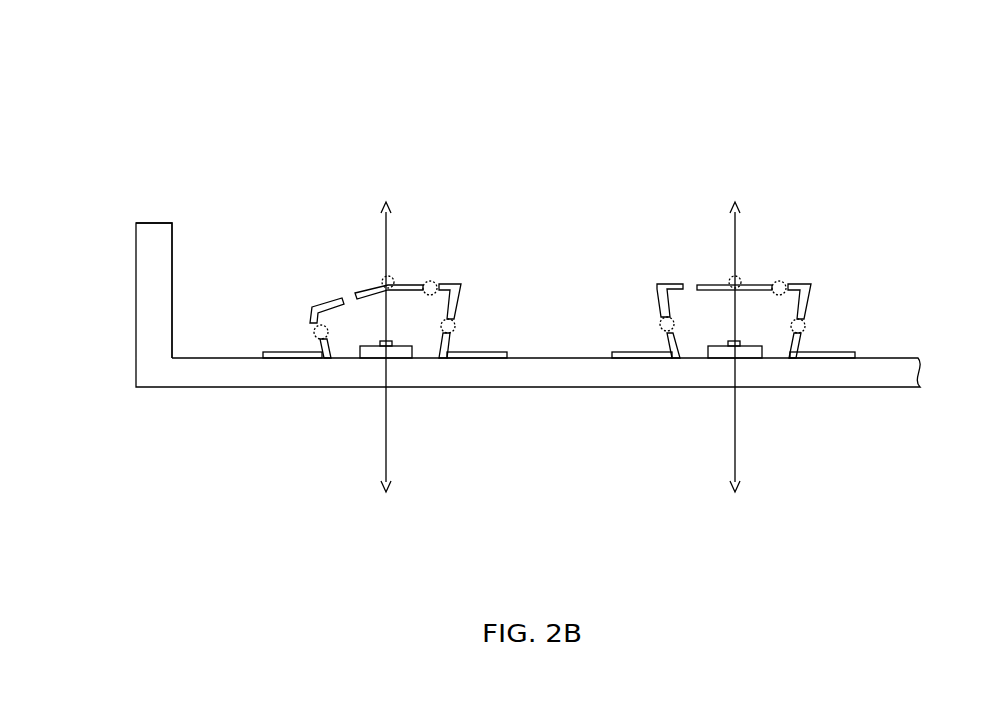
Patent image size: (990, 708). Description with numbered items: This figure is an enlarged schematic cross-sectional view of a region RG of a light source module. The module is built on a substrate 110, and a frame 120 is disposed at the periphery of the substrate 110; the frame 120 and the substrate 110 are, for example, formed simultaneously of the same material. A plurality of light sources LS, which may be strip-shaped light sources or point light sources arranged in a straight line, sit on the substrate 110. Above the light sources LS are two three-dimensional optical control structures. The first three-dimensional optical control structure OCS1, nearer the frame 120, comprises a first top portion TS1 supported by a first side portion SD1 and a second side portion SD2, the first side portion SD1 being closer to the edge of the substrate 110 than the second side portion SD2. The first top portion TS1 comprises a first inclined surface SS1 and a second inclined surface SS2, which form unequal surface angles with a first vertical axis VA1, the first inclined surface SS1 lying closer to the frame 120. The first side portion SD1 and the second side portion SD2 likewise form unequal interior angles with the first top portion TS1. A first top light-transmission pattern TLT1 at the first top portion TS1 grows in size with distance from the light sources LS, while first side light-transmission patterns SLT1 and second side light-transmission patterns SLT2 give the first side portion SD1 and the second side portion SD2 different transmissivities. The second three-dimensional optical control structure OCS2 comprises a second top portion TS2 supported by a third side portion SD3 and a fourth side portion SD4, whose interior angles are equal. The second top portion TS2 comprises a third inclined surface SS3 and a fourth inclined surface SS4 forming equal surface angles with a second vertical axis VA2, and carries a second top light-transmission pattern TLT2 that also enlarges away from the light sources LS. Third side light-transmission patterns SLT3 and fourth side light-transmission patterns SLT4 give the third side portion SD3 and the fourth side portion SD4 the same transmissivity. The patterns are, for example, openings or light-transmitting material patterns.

The substrate 110 is at (908, 375).
The frame 120 is at (157, 243).
The light sources LS is at (752, 358).
The first vertical axis VA1 is at (382, 329).
The second vertical axis VA2 is at (731, 329).
The first side light-transmission patterns SLT1 is at (313, 333).
The second side light-transmission patterns SLT2 is at (440, 335).
The third side light-transmission patterns SLT3 is at (660, 328).
The fourth side light-transmission patterns SLT4 is at (806, 331).
The first side portion SD1 is at (305, 310).
The second side portion SD2 is at (465, 313).
The third side portion SD3 is at (649, 294).
The fourth side portion SD4 is at (822, 298).
The first inclined surface SS1 is at (330, 287).
The second inclined surface SS2 is at (459, 277).
The third inclined surface SS3 is at (668, 272).
The fourth inclined surface SS4 is at (809, 277).
The first top light-transmission pattern TLT1 is at (432, 280).
The second top light-transmission pattern TLT2 is at (781, 280).
The first three-dimensional optical control structure OCS1 is at (462, 288).
The second three-dimensional optical control structure OCS2 is at (811, 302).
The first top portion TS1 is at (335, 37).
The second top portion TS2 is at (678, 37).
The region RG is at (922, 493).